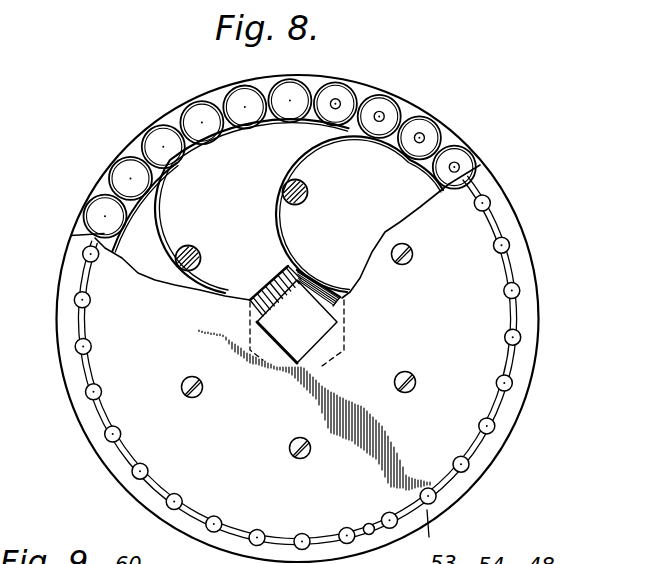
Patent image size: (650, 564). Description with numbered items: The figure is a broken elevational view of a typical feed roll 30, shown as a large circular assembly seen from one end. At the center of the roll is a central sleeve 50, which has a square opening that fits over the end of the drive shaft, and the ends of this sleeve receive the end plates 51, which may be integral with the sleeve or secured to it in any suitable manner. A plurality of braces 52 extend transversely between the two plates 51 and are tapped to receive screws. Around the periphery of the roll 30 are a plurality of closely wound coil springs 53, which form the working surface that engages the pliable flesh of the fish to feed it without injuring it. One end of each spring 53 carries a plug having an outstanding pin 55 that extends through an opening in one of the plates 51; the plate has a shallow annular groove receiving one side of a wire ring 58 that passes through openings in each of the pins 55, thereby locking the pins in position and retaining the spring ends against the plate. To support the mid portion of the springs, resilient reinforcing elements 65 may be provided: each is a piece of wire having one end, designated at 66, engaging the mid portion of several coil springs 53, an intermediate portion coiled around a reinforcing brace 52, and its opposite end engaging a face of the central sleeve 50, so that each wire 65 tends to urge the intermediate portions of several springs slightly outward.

The feed roll 30 is at (505, 196).
The coil springs 53 is at (429, 123).
The end of resilient reinforcing element engaging springs 66 is at (238, 135).
The resilient reinforcing elements 65 is at (290, 239).
The braces 52 is at (283, 199).
The central sleeve 50 is at (316, 278).
The end plates 51 is at (92, 423).
The pins 55 is at (517, 289).
The wire ring 58 is at (513, 359).